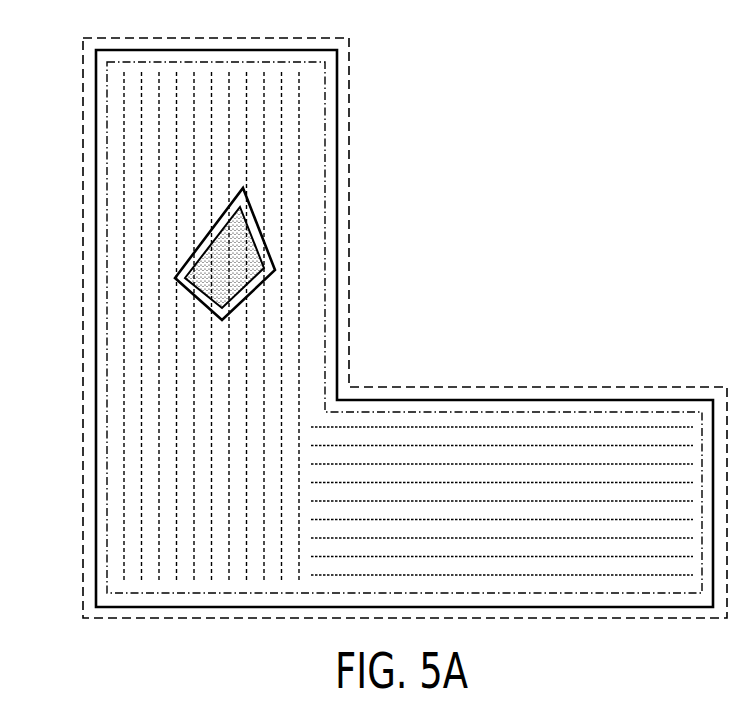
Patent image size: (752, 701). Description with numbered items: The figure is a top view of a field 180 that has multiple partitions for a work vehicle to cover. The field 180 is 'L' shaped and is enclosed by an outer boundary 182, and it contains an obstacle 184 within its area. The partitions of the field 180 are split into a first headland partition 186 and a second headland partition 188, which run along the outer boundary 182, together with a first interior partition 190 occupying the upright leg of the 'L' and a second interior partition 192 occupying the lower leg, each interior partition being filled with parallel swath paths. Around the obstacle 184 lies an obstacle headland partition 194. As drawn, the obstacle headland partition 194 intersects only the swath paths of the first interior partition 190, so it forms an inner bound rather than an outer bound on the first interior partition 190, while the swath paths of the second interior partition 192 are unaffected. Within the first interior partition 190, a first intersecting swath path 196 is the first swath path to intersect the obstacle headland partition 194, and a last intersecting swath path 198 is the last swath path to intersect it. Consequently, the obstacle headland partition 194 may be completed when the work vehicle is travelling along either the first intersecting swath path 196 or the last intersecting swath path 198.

The field 180 is at (541, 151).
The outer boundary 182 is at (268, 38).
The obstacle 184 is at (227, 265).
The first headland partition 186 is at (96, 62).
The second headland partition 188 is at (108, 137).
The first interior partition 190 is at (229, 147).
The second interior partition 192 is at (571, 457).
The obstacle headland partition 194 is at (188, 290).
The first intersecting swath path 196 is at (247, 97).
The last intersecting swath path 198 is at (262, 178).